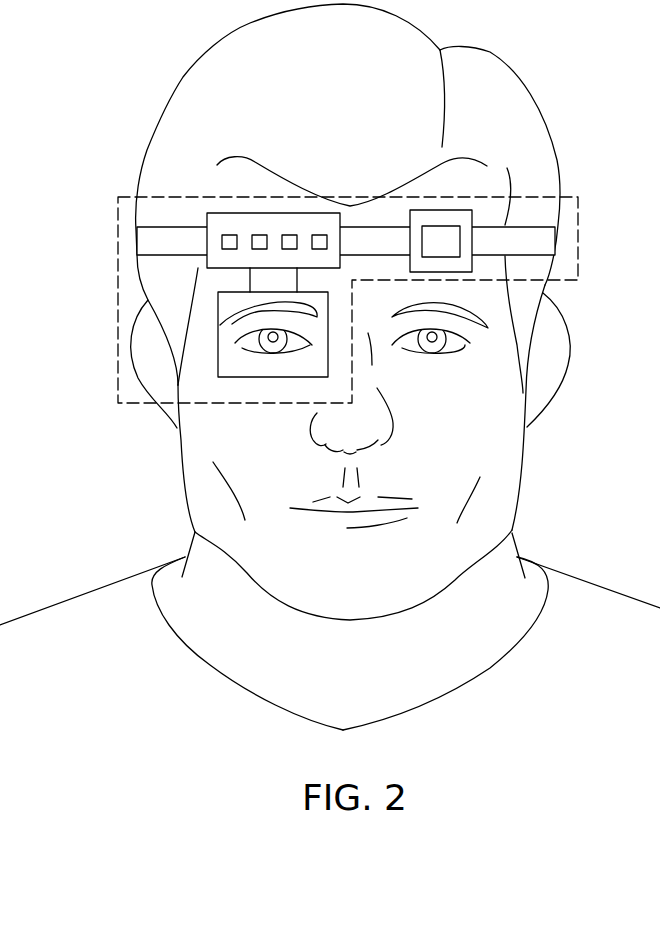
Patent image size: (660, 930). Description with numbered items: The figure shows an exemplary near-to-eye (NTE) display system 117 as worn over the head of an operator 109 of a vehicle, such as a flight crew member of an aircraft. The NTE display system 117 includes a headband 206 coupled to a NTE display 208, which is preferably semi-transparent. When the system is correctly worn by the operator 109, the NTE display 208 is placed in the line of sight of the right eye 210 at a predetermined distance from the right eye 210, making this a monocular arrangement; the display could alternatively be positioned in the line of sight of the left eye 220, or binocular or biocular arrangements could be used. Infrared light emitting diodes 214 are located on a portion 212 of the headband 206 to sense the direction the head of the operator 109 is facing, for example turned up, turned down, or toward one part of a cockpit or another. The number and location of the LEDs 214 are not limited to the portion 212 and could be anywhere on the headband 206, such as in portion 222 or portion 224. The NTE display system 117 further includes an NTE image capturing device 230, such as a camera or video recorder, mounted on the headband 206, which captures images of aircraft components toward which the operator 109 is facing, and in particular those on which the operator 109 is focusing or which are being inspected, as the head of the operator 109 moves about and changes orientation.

The operator 109 is at (525, 463).
The NTE display system 117 is at (580, 263).
The headband 206 is at (556, 238).
The NTE display 208 is at (218, 358).
The right eye 210 is at (273, 350).
The portion of the headband 212 is at (338, 212).
The infrared light emitting diodes 214 is at (229, 234).
The left eye 220 is at (432, 350).
The portion of the headband 222 is at (147, 240).
The portion of the headband 224 is at (520, 237).
The NTE image capturing device 230 is at (452, 209).